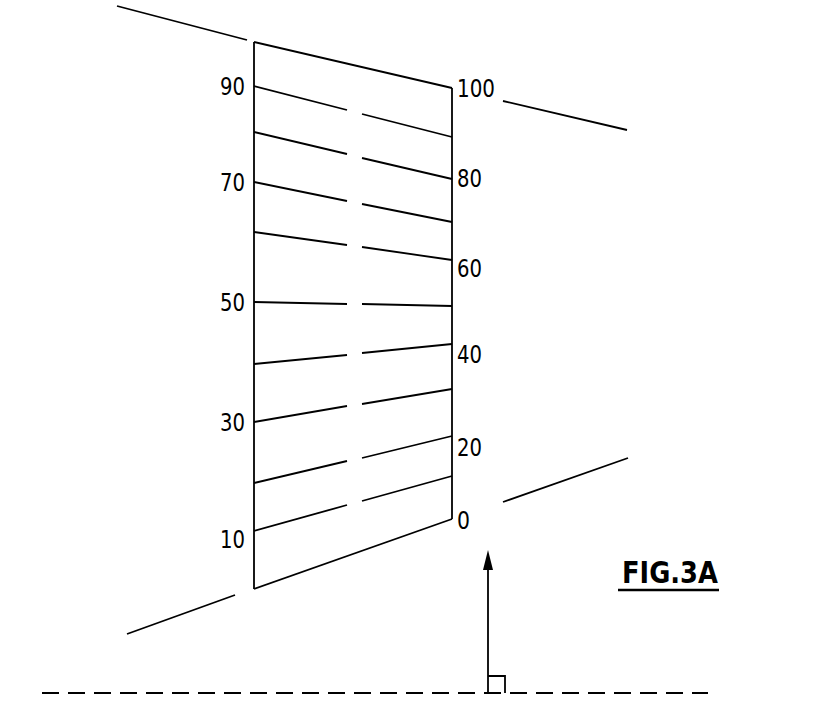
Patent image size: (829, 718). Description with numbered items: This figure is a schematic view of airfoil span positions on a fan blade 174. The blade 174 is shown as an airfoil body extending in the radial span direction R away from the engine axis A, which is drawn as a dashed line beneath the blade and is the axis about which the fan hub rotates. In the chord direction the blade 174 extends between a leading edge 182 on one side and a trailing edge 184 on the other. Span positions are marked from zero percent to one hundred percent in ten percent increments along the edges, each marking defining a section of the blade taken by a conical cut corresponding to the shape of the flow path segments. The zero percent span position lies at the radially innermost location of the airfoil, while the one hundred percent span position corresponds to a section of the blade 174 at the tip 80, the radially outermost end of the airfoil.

The tip 80 is at (352, 62).
The fan blade 174 is at (481, 223).
The leading edge 182 is at (254, 252).
The trailing edge 184 is at (452, 289).
The engine axis A is at (296, 693).
The radial span direction R is at (488, 628).